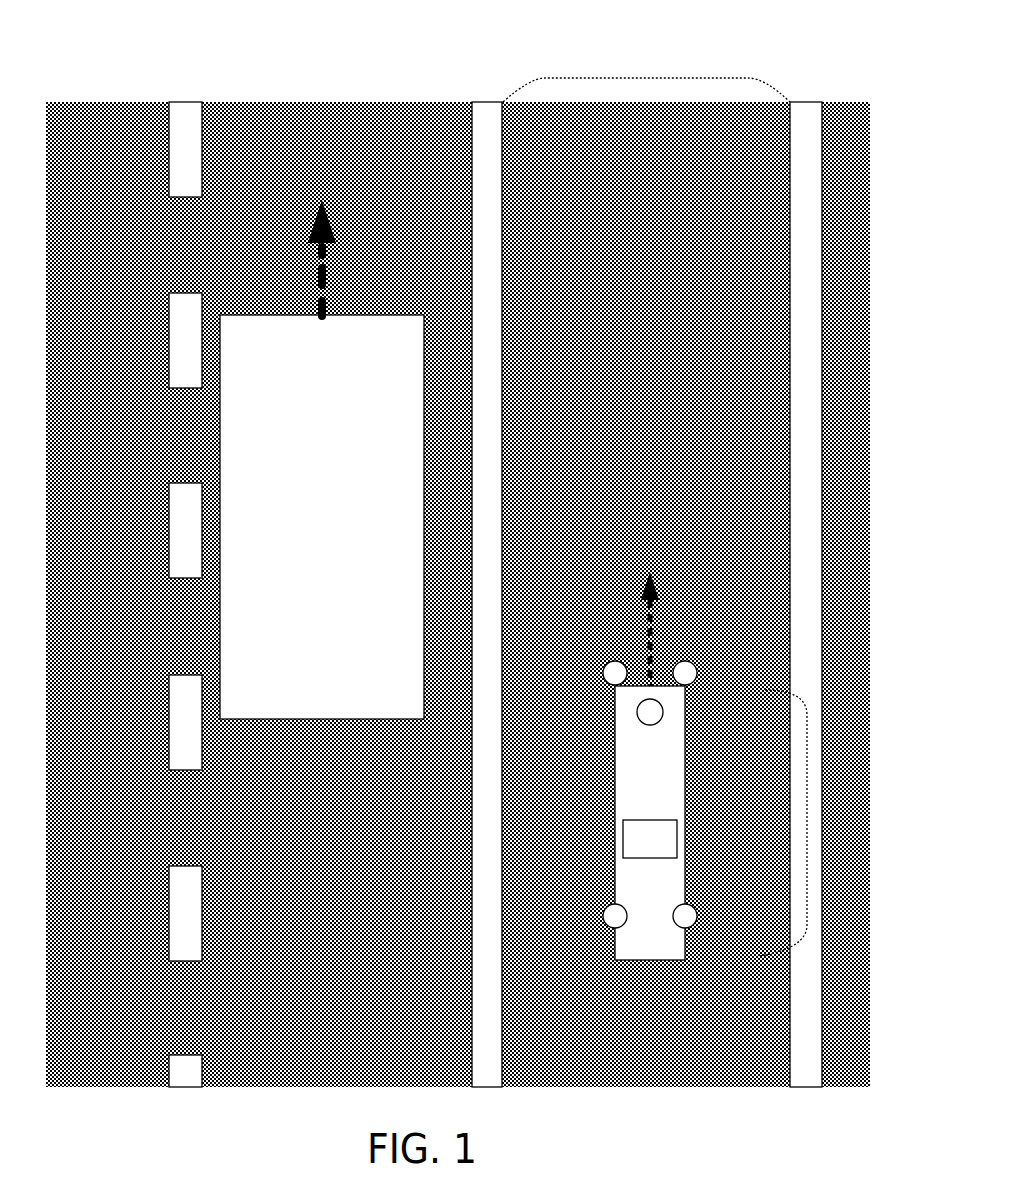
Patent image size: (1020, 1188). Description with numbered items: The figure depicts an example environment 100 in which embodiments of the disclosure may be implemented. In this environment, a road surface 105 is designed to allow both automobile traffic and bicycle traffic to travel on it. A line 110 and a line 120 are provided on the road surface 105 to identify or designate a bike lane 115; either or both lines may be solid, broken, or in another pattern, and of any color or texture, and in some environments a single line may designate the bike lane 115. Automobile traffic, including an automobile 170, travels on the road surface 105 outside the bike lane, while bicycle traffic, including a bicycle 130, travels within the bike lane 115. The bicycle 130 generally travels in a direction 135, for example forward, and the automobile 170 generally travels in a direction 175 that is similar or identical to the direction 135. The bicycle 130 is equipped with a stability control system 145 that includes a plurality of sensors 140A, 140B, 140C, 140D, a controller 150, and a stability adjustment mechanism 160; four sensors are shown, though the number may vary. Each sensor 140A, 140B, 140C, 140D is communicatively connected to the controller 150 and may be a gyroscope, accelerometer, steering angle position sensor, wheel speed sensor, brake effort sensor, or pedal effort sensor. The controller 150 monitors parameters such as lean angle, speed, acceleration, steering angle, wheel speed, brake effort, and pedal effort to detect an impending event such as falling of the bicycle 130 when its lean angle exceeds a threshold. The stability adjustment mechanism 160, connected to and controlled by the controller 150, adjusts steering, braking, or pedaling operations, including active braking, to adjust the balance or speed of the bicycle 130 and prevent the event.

The environment 100 is at (472, 548).
The road surface 105 is at (124, 99).
The line 110 is at (488, 99).
The bike lane 115 is at (647, 78).
The line 120 is at (803, 99).
The bicycle 130 is at (612, 769).
The direction 135 is at (655, 608).
The sensor 140A is at (690, 689).
The sensor 140B is at (608, 689).
The sensor 140C is at (688, 900).
The sensor 140D is at (611, 900).
The stability control system 145 is at (808, 822).
The controller 150 is at (650, 816).
The stability adjustment mechanism 160 is at (652, 726).
The automobile 170 is at (366, 311).
The direction 175 is at (333, 265).